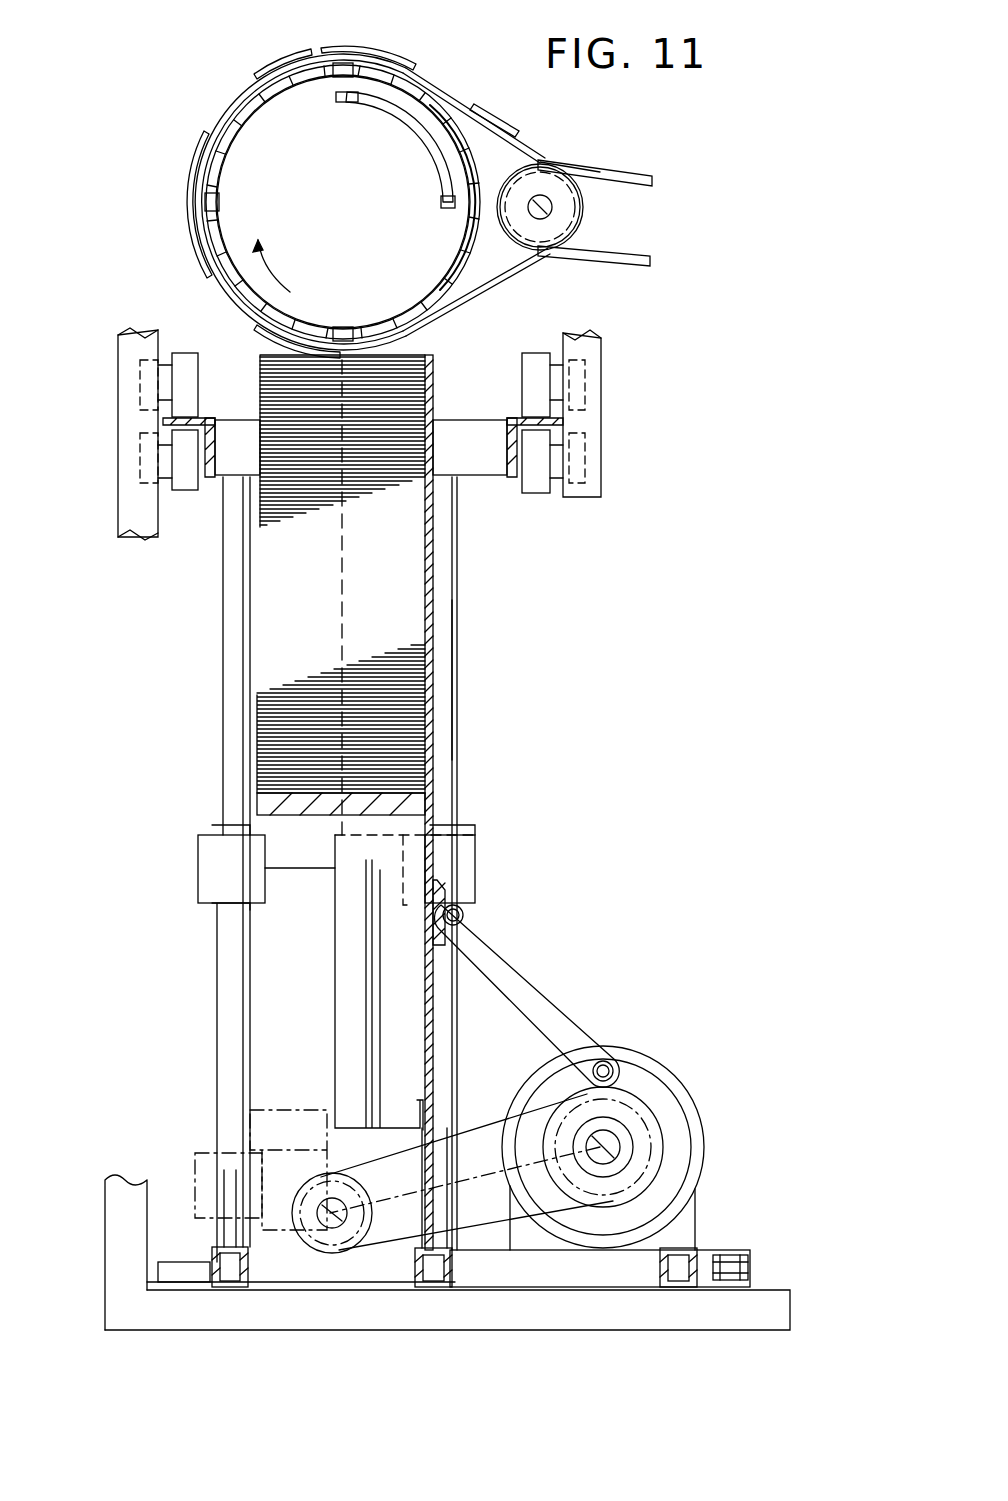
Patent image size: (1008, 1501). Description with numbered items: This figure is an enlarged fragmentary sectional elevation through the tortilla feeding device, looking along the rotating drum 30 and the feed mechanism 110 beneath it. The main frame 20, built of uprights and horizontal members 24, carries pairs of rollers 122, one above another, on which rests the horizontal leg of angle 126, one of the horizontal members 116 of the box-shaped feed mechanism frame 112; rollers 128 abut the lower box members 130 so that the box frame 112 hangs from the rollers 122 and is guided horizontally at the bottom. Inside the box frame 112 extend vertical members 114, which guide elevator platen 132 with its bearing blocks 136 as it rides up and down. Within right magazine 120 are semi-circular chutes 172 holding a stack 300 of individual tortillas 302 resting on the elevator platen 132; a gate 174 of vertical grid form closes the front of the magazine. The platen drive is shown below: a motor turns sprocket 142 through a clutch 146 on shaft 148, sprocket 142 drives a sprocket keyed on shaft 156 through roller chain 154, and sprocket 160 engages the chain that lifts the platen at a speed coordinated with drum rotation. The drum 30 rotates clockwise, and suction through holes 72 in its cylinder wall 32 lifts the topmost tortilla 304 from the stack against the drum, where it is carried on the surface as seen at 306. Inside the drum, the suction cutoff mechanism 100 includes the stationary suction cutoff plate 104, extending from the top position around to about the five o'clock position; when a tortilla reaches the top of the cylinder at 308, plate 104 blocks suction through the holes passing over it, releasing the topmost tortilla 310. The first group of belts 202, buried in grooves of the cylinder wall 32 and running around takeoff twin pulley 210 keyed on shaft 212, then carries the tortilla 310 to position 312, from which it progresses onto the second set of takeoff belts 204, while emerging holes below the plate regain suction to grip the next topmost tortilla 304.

The main frame 20 is at (110, 412).
The horizontal members 24 is at (385, 1332).
The rotating drum 30 is at (238, 102).
The cylinder wall 32 is at (215, 238).
The holes 72 is at (343, 82).
The suction cutoff mechanism 100 is at (420, 152).
The suction cutoff plate 104 is at (452, 270).
The feed mechanism 110 is at (458, 742).
The feed mechanism frame 112 is at (458, 358).
The vertical members 114 is at (455, 660).
The horizontal members 116 is at (222, 478).
The right magazine 120 is at (258, 620).
The rollers 122 is at (185, 353).
The angle 126 is at (205, 418).
The rollers 128 is at (158, 1272).
The lower box members 130 is at (215, 1255).
The elevator platen 132 is at (262, 805).
The bearing blocks 136 is at (478, 862).
The sprocket 142 is at (640, 1130).
The clutch 146 is at (648, 1082).
The shaft 148 is at (618, 1160).
The roller chain 154 is at (470, 1135).
The shaft 156 is at (332, 1228).
The sprocket 160 is at (370, 1200).
The semi-circular chutes 172 is at (438, 598).
The gate 174 is at (222, 945).
The first group of belts 202 is at (288, 72).
The second set of takeoff belts 204 is at (652, 178).
The takeoff twin pulley 210 is at (580, 212).
The shaft 212 is at (548, 216).
The stack 300 is at (322, 562).
The individual tortillas 302 is at (257, 748).
The topmost tortilla 304 is at (268, 335).
The tortilla carried on drum surface 306 is at (198, 172).
The tortilla at top of cylinder 308 is at (365, 53).
The topmost tortilla released 310 is at (418, 66).
The position 312 is at (588, 163).